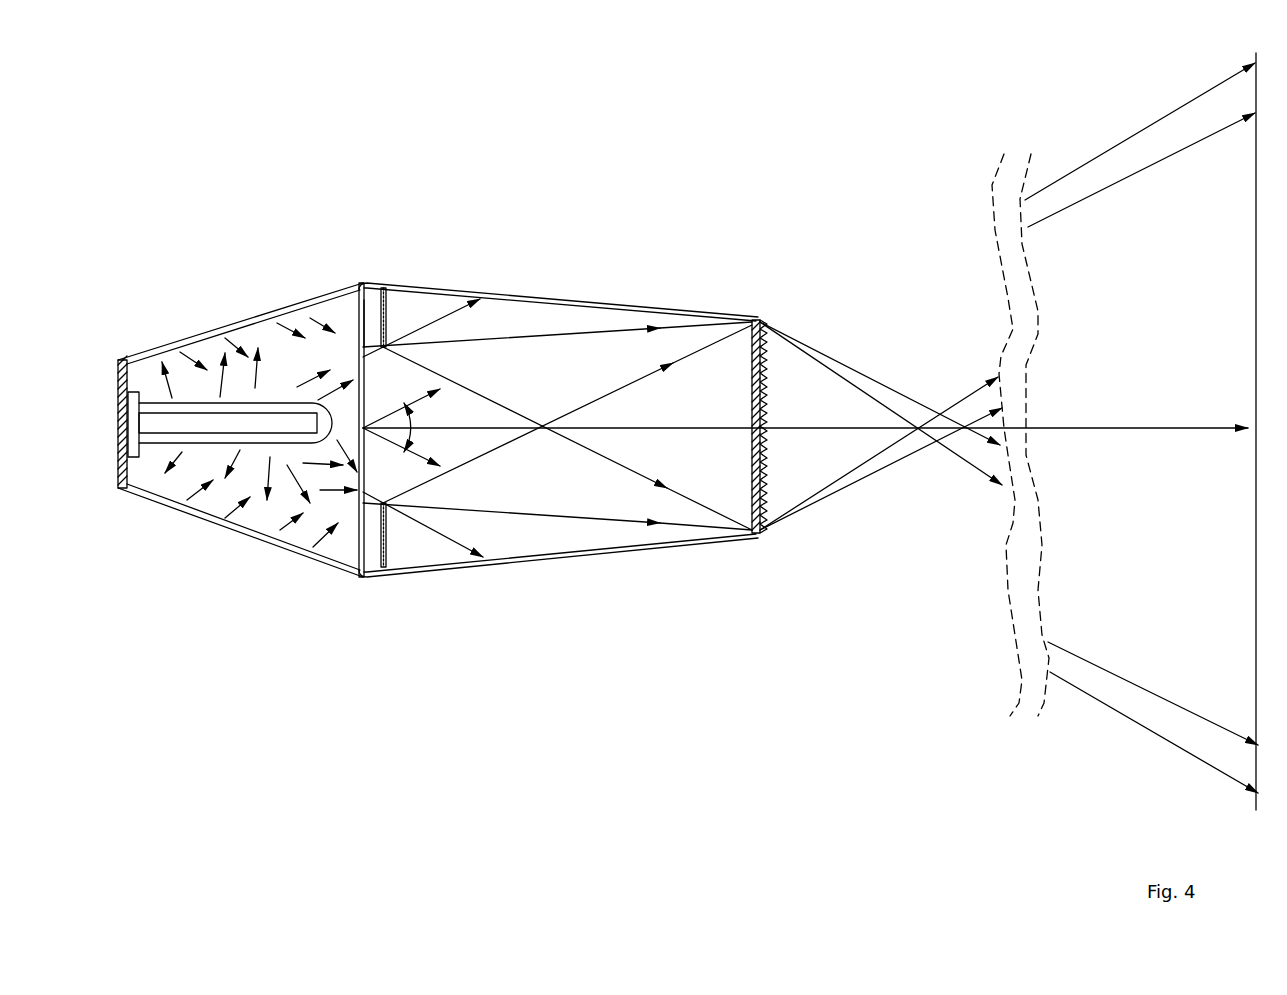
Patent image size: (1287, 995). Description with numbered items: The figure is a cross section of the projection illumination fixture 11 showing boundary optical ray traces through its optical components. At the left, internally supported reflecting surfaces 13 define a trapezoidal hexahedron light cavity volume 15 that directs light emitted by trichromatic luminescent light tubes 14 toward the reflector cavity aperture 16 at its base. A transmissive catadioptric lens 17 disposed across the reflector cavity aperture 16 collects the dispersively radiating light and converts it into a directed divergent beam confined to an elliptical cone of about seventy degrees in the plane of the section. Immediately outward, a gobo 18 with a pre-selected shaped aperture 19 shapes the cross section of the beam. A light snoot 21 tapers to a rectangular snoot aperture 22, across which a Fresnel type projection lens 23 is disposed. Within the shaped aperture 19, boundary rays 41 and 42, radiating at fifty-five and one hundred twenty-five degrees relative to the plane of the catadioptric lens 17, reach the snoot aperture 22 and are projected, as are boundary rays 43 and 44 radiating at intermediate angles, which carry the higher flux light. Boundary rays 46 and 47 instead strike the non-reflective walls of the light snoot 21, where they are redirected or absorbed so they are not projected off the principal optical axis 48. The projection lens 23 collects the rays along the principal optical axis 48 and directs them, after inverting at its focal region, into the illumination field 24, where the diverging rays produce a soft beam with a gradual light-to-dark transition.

The projection illumination fixture 11 is at (172, 280).
The reflecting surfaces 13 is at (163, 350).
The trichromatic luminescent light tubes 14 is at (152, 440).
The trapezoidal hexahedron light cavity volume 15 is at (252, 512).
The reflector cavity aperture 16 is at (355, 285).
The transmissive catadioptric lens 17 is at (358, 318).
The gobo 18 is at (382, 290).
The shaped aperture 19 is at (390, 382).
The light snoot 21 is at (598, 303).
The snoot aperture 22 is at (756, 316).
The projection lens 23 is at (767, 470).
The illumination field 24 is at (1124, 431).
The boundary ray 41 is at (508, 412).
The boundary ray 42 is at (503, 447).
The boundary ray 43 is at (550, 332).
The boundary ray 44 is at (520, 513).
The boundary ray 46 is at (433, 323).
The boundary ray 47 is at (437, 537).
The principal optical axis 48 is at (707, 428).